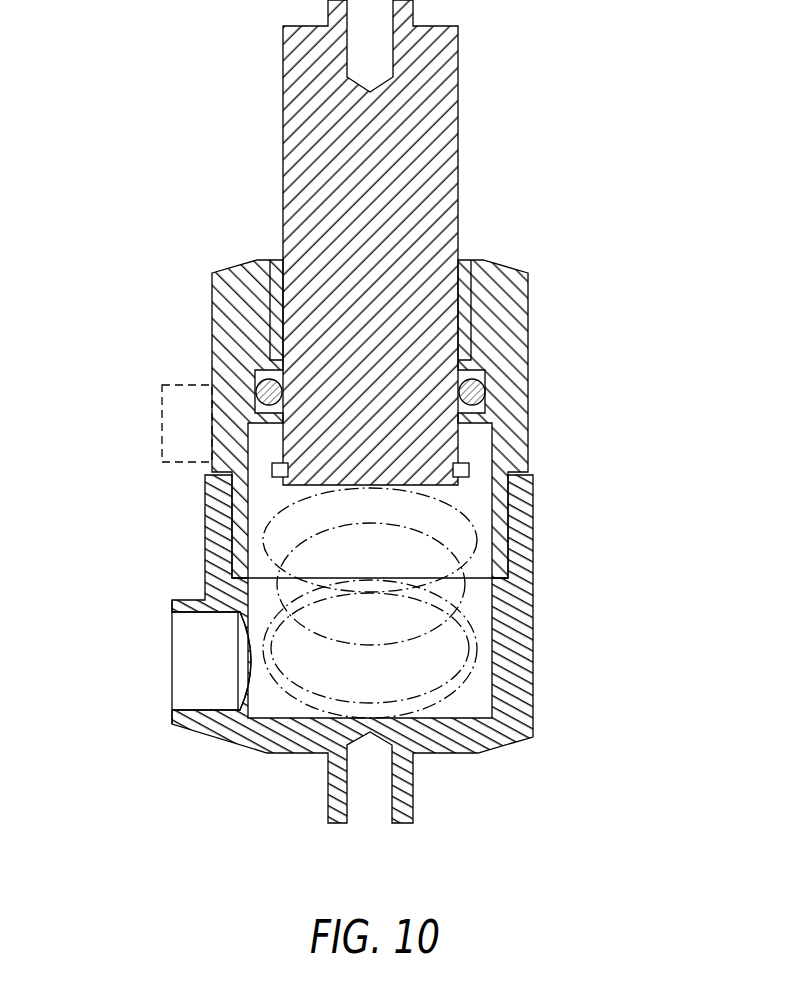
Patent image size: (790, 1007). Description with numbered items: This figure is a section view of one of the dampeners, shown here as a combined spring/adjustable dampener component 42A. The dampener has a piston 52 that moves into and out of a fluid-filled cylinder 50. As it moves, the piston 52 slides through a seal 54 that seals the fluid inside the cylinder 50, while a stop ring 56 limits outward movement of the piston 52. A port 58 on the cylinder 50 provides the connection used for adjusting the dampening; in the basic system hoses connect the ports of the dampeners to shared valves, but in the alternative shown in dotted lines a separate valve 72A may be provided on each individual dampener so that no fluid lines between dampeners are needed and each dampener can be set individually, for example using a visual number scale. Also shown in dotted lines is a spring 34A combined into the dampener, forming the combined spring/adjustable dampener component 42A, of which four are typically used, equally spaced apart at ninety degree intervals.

The spring 34A is at (473, 668).
The combined spring/adjustable dampener component 42A is at (618, 381).
The fluid-filled cylinder 50 is at (515, 643).
The piston 52 is at (437, 130).
The seal 54 is at (476, 396).
The stop ring 56 is at (470, 469).
The port 58 is at (190, 666).
The valve 72A is at (180, 423).